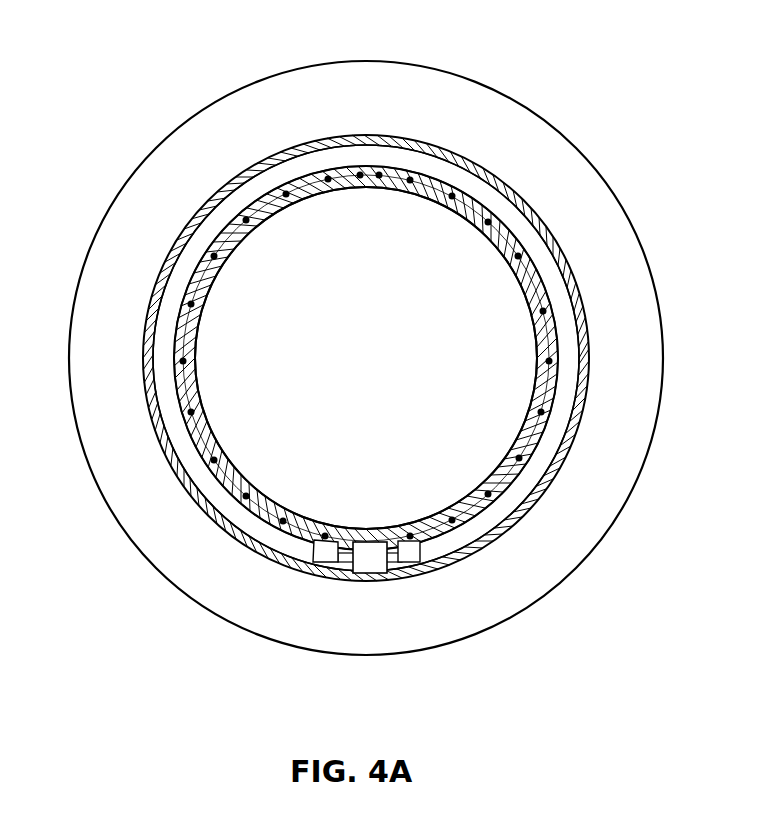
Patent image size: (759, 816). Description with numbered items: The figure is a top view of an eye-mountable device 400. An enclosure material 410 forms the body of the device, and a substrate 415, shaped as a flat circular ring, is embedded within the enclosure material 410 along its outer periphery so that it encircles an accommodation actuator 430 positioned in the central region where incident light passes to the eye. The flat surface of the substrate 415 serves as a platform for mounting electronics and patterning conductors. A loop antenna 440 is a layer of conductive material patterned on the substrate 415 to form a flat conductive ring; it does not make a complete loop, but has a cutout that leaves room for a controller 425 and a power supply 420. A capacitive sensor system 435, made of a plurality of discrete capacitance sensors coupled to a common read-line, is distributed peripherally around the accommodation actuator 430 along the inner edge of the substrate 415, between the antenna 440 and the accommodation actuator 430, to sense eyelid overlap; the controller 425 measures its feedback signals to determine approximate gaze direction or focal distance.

The eye-mountable device 400 is at (144, 81).
The enclosure material 410 is at (108, 518).
The substrate 415 is at (537, 495).
The power supply 420 is at (322, 548).
The controller 425 is at (370, 563).
The accommodation actuator 430 is at (328, 320).
The capacitive sensor system 435 is at (537, 282).
The loop antenna 440 is at (483, 528).